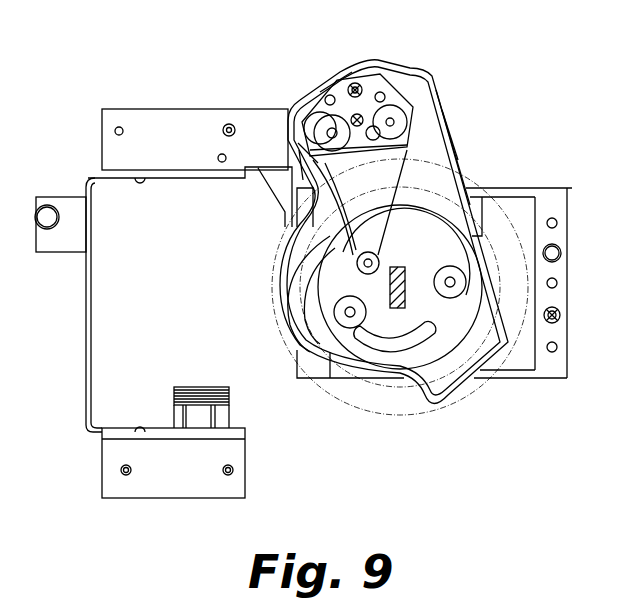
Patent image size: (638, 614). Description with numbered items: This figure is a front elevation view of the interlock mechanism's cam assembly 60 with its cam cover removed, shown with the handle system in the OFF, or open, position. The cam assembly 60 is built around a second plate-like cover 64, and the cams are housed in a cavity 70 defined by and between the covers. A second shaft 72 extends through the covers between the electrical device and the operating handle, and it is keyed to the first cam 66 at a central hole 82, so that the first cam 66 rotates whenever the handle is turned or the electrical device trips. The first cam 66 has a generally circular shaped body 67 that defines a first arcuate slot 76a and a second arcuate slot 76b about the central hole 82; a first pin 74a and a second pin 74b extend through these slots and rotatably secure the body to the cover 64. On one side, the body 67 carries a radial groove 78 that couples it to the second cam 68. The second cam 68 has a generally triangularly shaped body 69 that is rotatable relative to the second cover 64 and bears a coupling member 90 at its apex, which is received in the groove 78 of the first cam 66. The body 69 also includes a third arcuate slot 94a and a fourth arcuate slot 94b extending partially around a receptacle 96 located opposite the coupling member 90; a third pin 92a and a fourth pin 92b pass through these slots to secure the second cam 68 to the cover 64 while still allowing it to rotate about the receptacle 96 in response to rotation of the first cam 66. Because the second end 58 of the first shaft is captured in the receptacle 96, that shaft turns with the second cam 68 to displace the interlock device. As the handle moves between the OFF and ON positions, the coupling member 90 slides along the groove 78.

The cam assembly 60 is at (498, 104).
The second end 58 is at (372, 64).
The second plate-like cover 64 is at (462, 160).
The first cam 66 is at (561, 223).
The generally circular shaped body 67 is at (493, 390).
The second cam 68 is at (398, 80).
The generally triangularly shaped body 69 is at (440, 152).
The cavity 70 is at (410, 406).
The second shaft 72 is at (327, 380).
The first pin 74a is at (497, 338).
The second pin 74b is at (285, 302).
The first arcuate slot 76a is at (404, 212).
The second arcuate slot 76b is at (447, 396).
The radial groove 78 is at (283, 261).
The central hole 82 is at (550, 188).
The coupling member 90 is at (368, 250).
The third pin 92a is at (262, 124).
The fourth pin 92b is at (447, 96).
The third arcuate slot 94a is at (291, 106).
The fourth arcuate slot 94b is at (283, 235).
The receptacle 96 is at (340, 68).